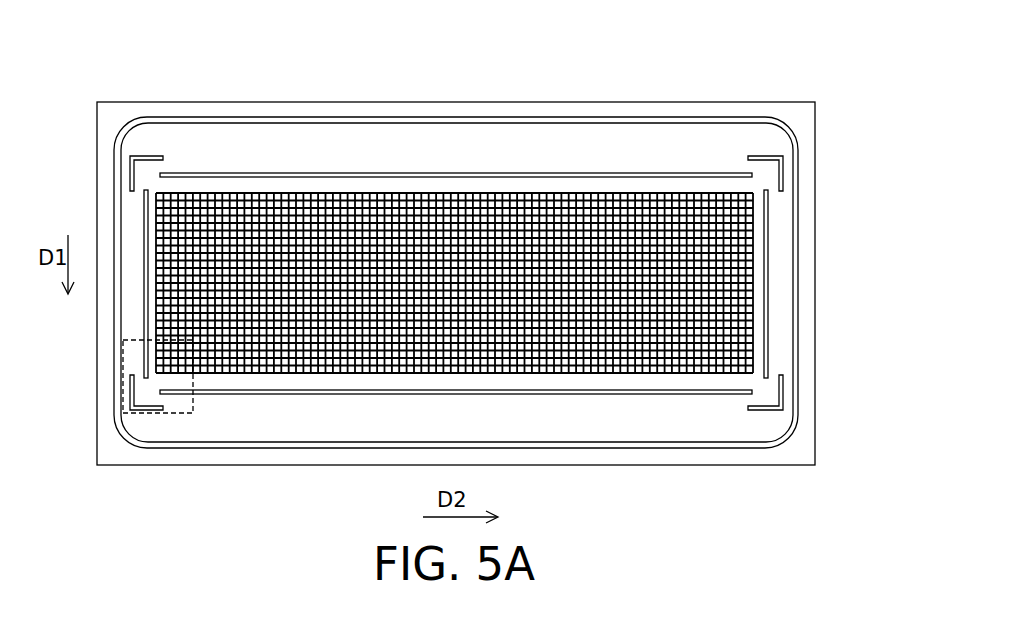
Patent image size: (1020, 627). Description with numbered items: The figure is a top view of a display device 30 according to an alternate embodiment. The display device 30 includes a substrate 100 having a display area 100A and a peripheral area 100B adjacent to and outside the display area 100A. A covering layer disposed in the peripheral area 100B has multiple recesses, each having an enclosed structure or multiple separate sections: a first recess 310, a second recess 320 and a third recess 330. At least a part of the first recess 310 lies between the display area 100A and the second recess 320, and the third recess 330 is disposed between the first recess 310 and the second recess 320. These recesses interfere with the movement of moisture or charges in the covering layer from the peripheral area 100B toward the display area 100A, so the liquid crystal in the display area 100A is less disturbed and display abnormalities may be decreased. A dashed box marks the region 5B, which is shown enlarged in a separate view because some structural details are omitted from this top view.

The display device 30 is at (65, 52).
The substrate 100 is at (815, 262).
The display area 100A is at (458, 192).
The peripheral area 100B is at (612, 100).
The first recess 310 is at (295, 172).
The second recess 320 is at (188, 117).
The third recess 330 is at (143, 156).
The region 5B is at (125, 358).